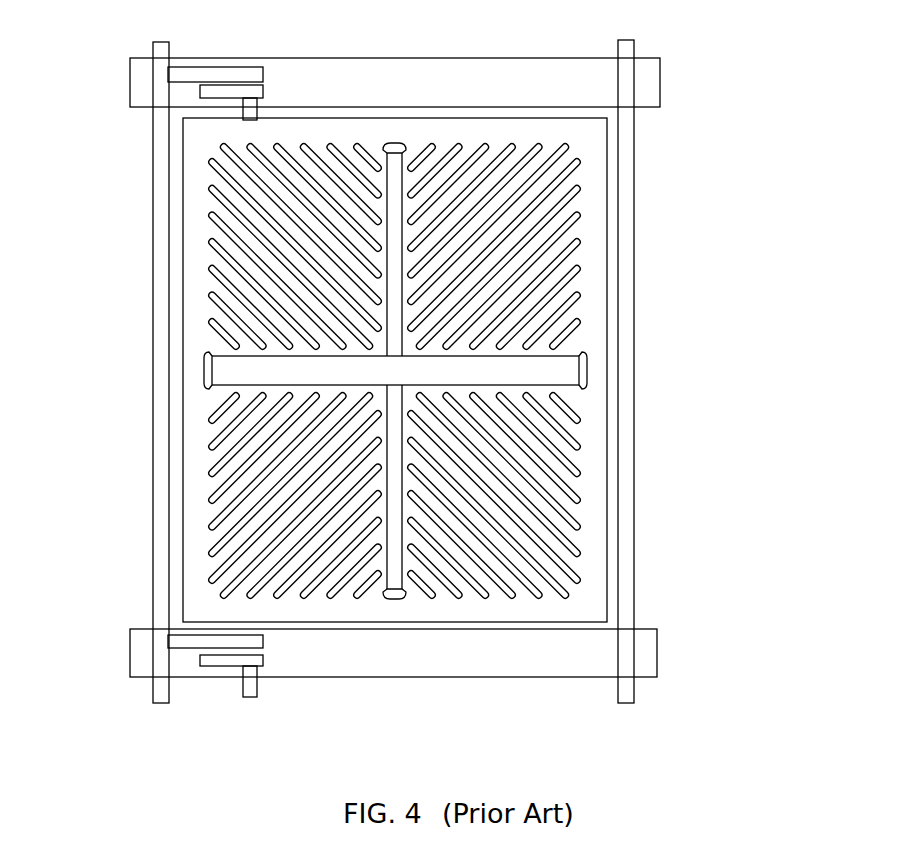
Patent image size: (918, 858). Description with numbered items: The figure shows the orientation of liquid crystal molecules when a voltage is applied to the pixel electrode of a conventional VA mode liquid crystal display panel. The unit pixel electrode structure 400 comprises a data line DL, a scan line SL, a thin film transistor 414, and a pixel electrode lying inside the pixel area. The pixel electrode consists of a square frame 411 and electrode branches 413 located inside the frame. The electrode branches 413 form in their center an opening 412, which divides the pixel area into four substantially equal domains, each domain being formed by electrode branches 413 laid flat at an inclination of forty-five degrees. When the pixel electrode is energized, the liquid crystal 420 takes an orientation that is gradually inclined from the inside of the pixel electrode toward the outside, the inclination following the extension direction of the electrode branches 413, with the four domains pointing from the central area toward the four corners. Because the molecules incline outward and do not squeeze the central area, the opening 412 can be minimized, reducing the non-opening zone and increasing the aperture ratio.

The unit pixel electrode structure 400 is at (415, 352).
The square frame 411 is at (590, 390).
The opening 412 is at (250, 375).
The electrode branches 413 is at (490, 348).
The thin film transistor 414 is at (228, 68).
The liquid crystal 420 is at (520, 545).
The scan line SL is at (443, 68).
The data line DL is at (153, 165).